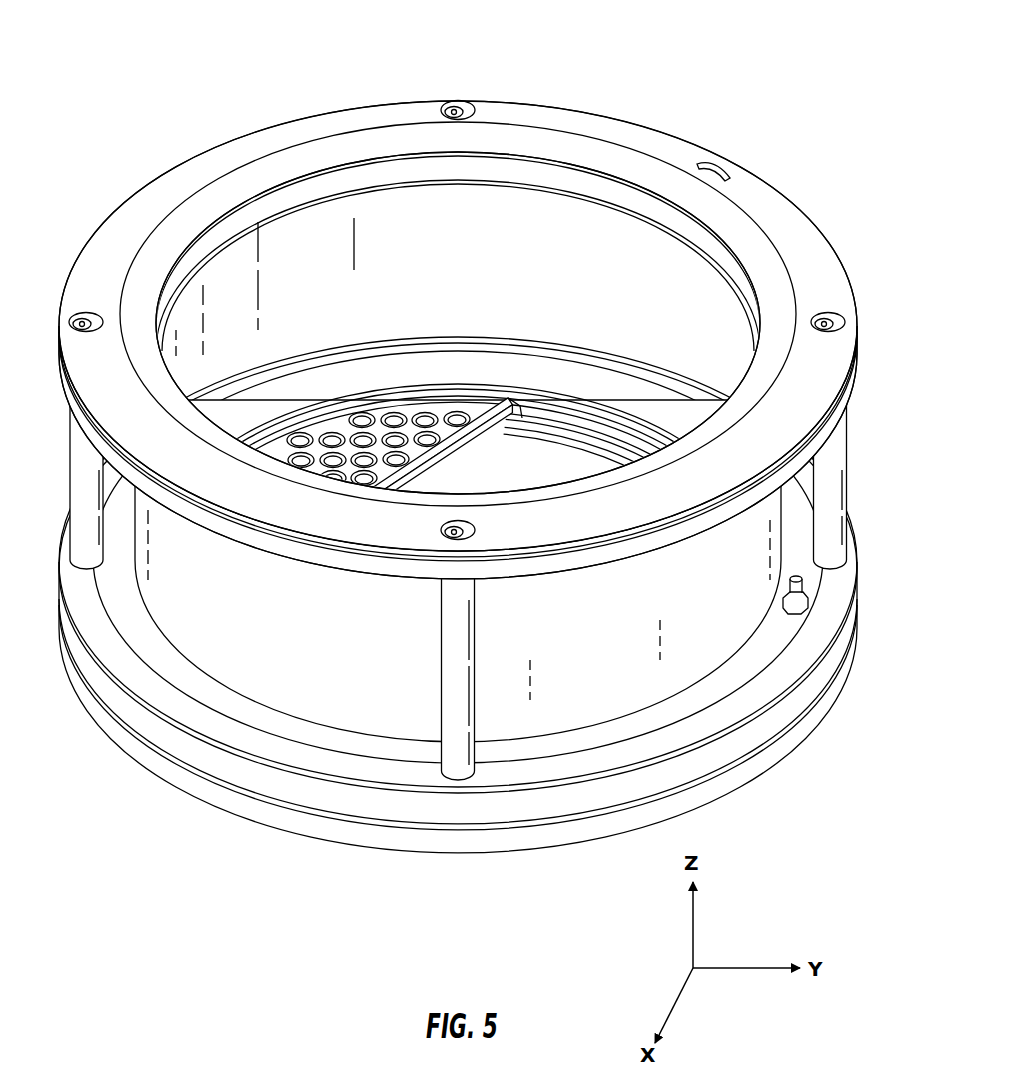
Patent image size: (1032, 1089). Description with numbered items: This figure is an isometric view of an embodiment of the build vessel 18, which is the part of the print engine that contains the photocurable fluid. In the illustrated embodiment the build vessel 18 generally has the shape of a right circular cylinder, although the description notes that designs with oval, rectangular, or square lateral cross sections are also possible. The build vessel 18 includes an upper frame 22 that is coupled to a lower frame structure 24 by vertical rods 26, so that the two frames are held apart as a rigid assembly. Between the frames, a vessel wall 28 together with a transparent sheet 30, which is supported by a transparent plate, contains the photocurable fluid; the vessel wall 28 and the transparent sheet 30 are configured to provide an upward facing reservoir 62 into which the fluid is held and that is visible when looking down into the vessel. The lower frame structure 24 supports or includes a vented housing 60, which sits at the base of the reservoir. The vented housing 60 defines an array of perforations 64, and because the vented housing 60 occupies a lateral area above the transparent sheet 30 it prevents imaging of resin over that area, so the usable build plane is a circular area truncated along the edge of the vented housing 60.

The build vessel 18 is at (722, 60).
The upper frame 22 is at (770, 208).
The lower frame structure 24 is at (165, 733).
The vertical rods 26 is at (838, 488).
The vessel wall 28 is at (345, 688).
The transparent sheet 30 is at (555, 470).
The vented housing 60 is at (490, 418).
The upward facing reservoir 62 is at (523, 235).
The array of perforations 64 is at (335, 437).